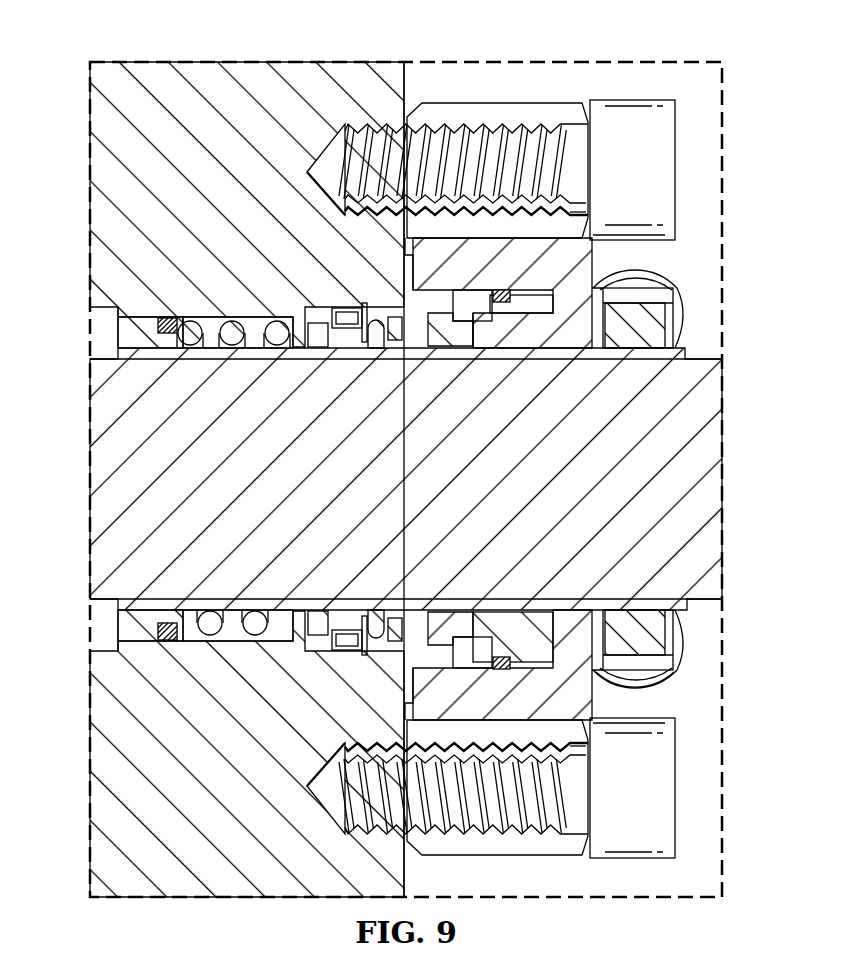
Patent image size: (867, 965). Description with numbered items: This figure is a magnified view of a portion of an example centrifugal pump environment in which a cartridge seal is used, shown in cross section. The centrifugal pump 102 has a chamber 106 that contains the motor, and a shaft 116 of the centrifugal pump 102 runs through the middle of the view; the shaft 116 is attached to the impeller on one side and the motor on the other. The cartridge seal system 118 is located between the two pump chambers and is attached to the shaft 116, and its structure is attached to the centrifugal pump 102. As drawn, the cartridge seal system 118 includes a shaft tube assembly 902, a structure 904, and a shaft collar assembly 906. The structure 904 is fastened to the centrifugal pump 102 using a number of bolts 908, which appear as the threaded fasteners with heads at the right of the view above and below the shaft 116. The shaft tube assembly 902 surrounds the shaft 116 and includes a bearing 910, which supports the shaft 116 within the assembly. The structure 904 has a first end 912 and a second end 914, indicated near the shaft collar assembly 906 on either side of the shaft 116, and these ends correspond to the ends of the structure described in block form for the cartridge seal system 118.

The centrifugal pump 102 is at (226, 61).
The chamber 106 is at (518, 87).
The shaft 116 is at (714, 446).
The cartridge seal system 118 is at (207, 667).
The shaft tube assembly 902 is at (130, 300).
The structure 904 is at (584, 693).
The shaft collar assembly 906 is at (615, 626).
The number of bolts 908 is at (630, 100).
The bearing 910 is at (541, 317).
The first end 912 is at (562, 320).
The second end 914 is at (597, 643).